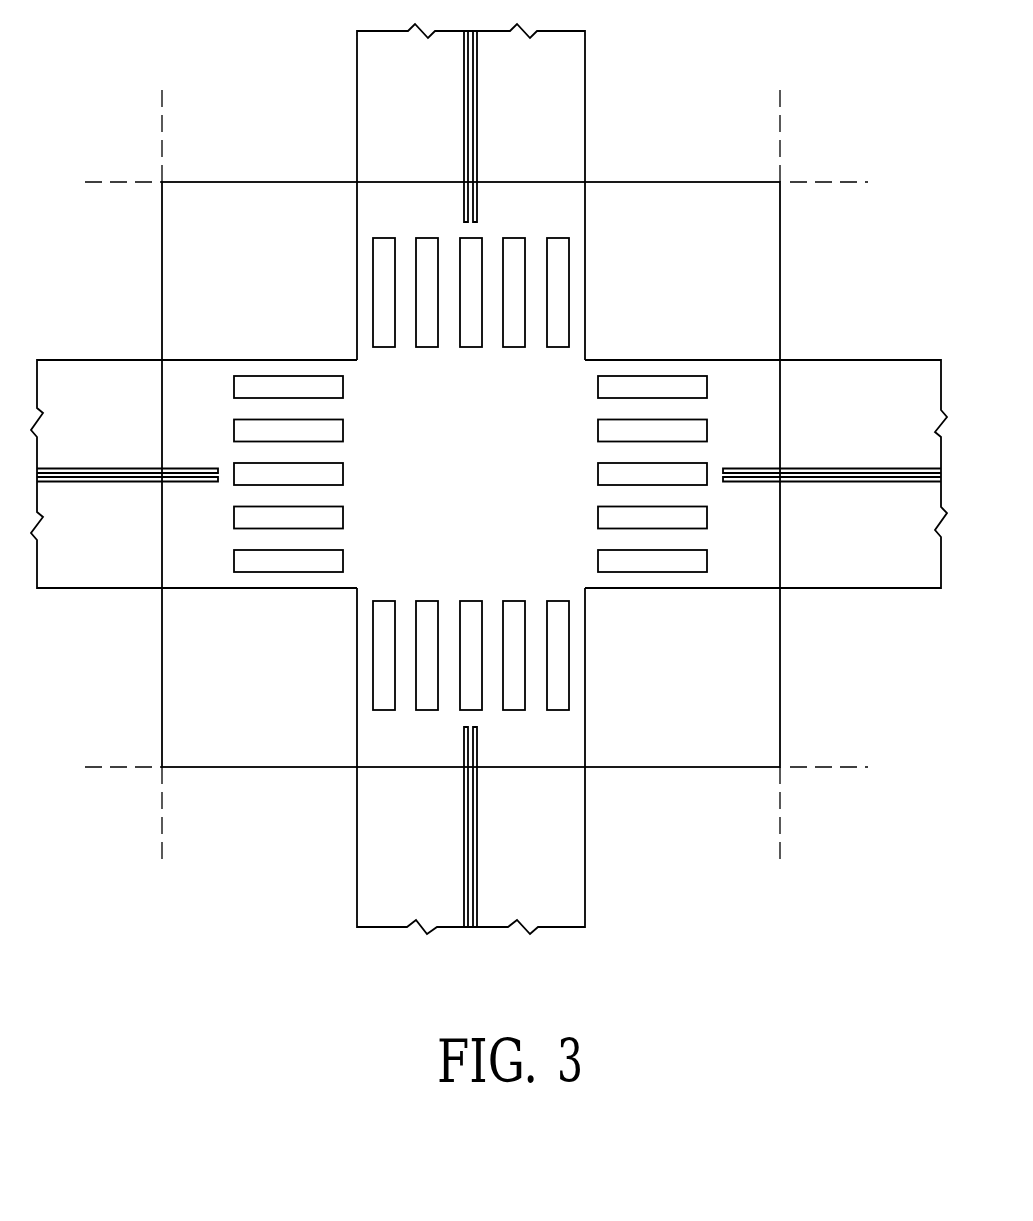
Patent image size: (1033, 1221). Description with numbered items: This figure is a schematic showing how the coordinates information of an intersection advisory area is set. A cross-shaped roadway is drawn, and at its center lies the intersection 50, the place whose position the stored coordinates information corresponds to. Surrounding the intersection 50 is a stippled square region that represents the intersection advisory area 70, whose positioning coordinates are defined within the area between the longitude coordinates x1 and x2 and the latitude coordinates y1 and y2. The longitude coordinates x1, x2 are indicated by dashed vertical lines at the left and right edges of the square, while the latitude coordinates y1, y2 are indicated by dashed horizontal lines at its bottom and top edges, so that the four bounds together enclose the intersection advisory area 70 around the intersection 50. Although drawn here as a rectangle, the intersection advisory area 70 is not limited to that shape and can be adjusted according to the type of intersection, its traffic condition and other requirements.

The intersection 50 is at (487, 488).
The intersection advisory area 70 is at (732, 277).
The longitude coordinate x1 is at (167, 501).
The longitude coordinate x2 is at (785, 501).
The latitude coordinate y1 is at (500, 764).
The latitude coordinate y2 is at (499, 178).